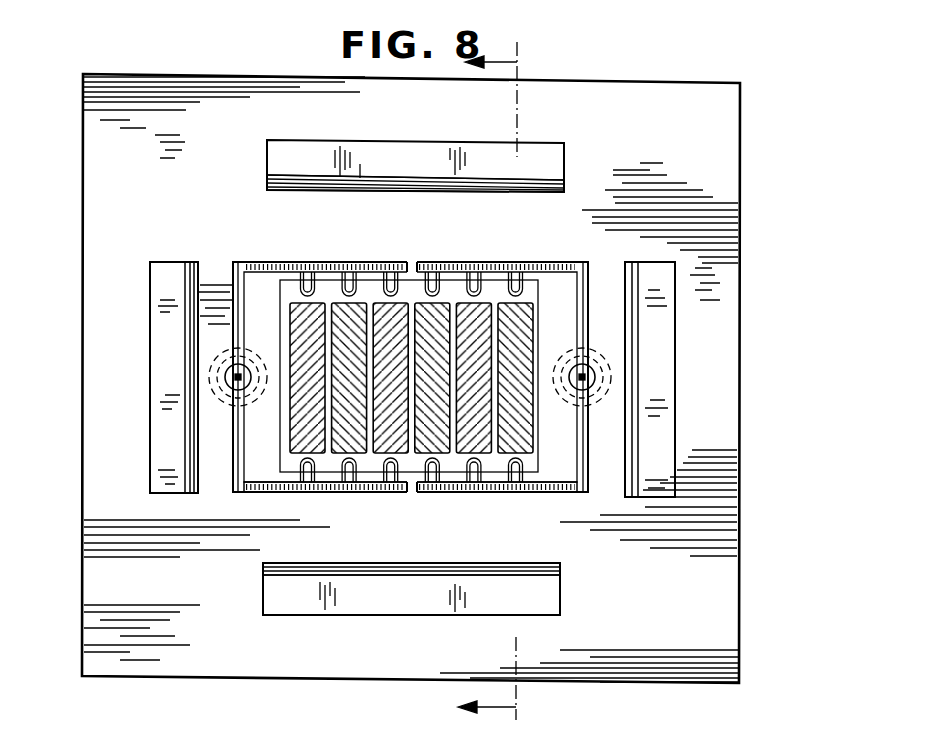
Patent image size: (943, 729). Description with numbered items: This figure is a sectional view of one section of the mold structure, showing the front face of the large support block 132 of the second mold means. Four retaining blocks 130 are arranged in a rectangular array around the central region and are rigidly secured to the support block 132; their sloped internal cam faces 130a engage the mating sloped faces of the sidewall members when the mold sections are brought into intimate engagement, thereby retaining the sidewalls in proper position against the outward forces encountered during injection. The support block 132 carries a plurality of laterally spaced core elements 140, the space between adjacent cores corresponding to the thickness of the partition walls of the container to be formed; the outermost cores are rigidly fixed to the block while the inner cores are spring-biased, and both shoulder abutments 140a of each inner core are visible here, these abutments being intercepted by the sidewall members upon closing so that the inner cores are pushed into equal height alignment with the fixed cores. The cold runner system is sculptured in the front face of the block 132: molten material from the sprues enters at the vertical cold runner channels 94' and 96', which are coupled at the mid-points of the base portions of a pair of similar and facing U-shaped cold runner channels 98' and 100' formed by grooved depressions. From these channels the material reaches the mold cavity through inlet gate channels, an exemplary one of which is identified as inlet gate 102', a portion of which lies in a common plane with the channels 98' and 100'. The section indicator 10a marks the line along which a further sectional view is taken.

The support block 132 is at (715, 162).
The retaining blocks 130 is at (315, 158).
The sloped internal cam faces 130a is at (290, 187).
The inlet gate channel 102' is at (410, 354).
The U-shaped cold runner channel 98' is at (325, 509).
The U-shaped cold runner channel 100' is at (497, 509).
The core elements 140 is at (388, 362).
The shoulder abutments 140a is at (325, 277).
The vertical cold runner channel 94' is at (181, 369).
The vertical cold runner channel 96' is at (638, 369).
The section line 10a is at (520, 385).